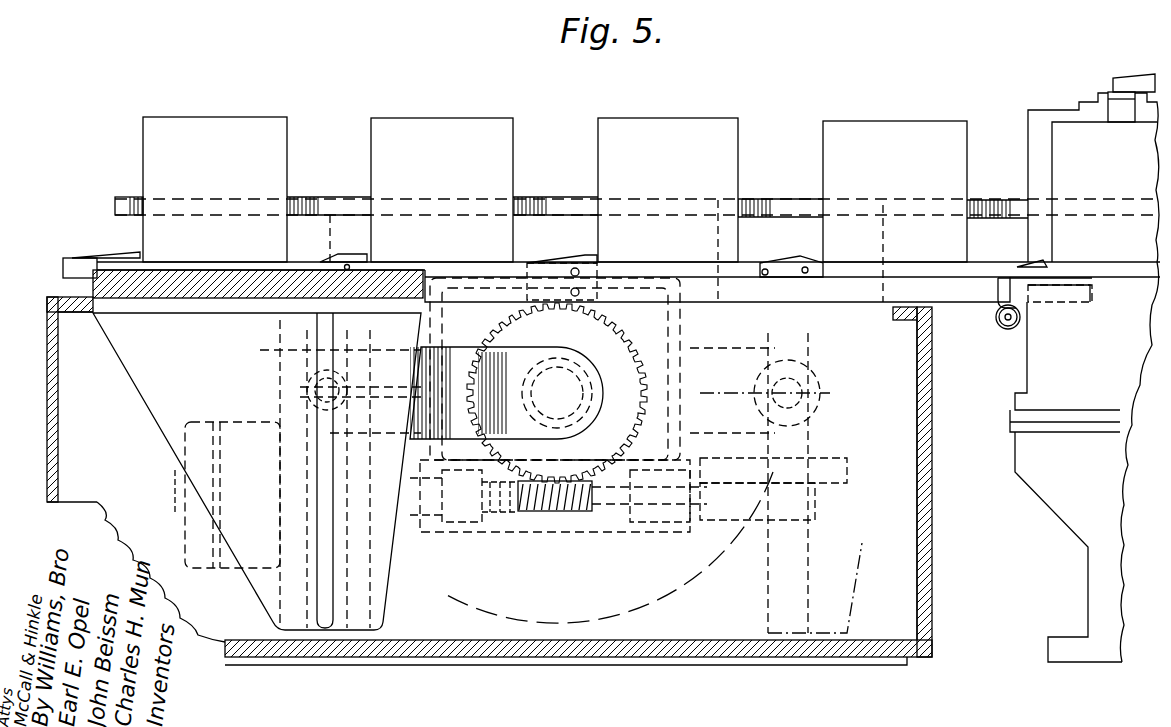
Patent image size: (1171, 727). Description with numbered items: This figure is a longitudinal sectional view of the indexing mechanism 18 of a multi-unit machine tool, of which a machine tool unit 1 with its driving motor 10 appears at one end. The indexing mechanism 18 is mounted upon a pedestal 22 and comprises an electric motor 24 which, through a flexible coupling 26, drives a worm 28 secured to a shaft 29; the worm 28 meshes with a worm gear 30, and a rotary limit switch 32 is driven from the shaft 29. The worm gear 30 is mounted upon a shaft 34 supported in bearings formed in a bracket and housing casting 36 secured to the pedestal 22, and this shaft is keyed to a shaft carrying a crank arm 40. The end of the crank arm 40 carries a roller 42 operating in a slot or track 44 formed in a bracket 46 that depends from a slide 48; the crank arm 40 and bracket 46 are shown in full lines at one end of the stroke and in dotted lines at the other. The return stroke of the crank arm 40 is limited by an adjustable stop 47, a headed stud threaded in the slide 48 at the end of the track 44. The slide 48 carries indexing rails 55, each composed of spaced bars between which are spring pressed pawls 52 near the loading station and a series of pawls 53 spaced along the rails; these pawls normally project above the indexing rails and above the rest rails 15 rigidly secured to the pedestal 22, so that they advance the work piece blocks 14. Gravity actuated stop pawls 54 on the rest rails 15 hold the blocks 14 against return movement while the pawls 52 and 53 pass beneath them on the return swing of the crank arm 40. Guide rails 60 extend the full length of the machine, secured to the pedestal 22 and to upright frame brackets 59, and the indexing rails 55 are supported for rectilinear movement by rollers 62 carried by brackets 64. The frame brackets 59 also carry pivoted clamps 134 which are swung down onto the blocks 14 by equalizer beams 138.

The machine tool unit 1 is at (1092, 389).
The driving motor 10 is at (822, 397).
The work piece block 14 is at (228, 159).
The rest rail 15 is at (85, 248).
The indexing mechanism 18 is at (655, 340).
The pedestal 22 is at (46, 436).
The electric motor 24 is at (186, 500).
The flexible coupling 26 is at (445, 528).
The worm 28 is at (570, 522).
The shaft 29 is at (500, 530).
The worm gear 30 is at (612, 528).
The rotary limit switch 32 is at (838, 480).
The shaft 34 is at (587, 402).
The bracket and housing casting 36 is at (675, 392).
The crank arm 40 is at (448, 357).
The roller 42 is at (350, 383).
The slot or track 44 is at (385, 588).
The bracket 46 is at (150, 384).
The adjustable stop 47 is at (305, 352).
The slide 48 is at (165, 290).
The pawl 52 is at (105, 250).
The pawl 53 is at (578, 255).
The stop pawl 54 is at (800, 255).
The indexing rail 55 is at (66, 266).
The frame bracket 59 is at (1047, 113).
The guide rail 60 is at (125, 197).
The roller 62 is at (998, 332).
The bracket 64 is at (1000, 292).
The clamp 134 is at (1122, 115).
The equalizer beam 138 is at (1122, 78).